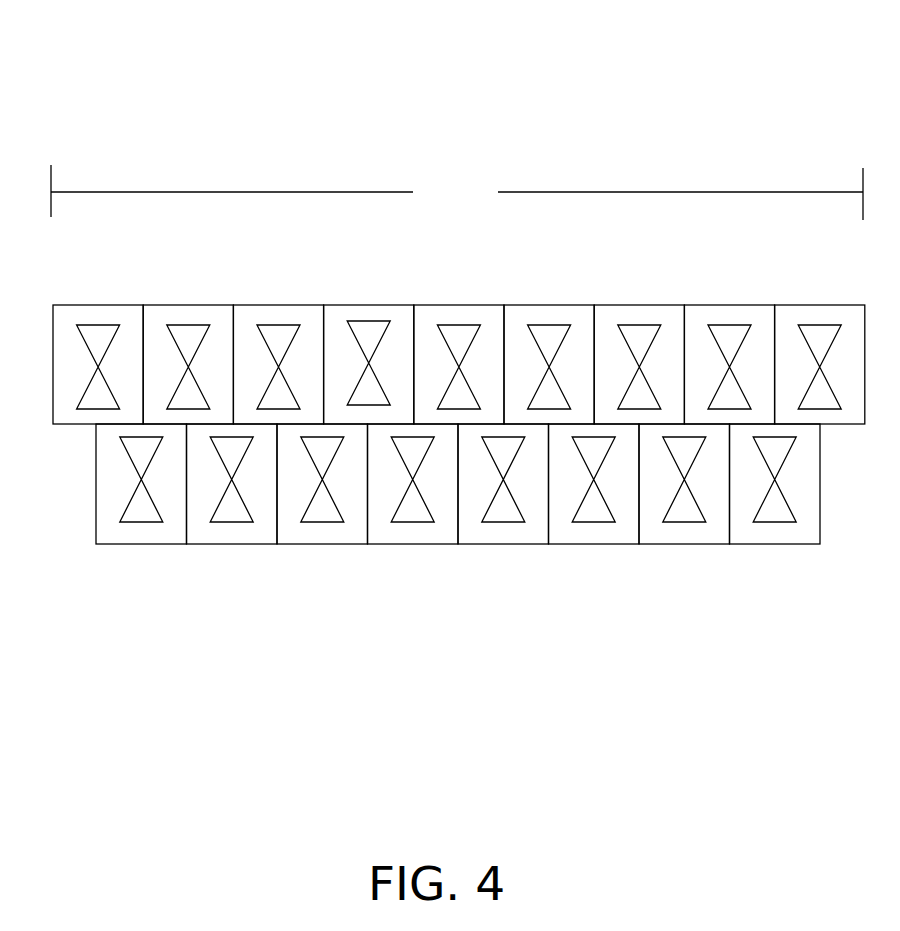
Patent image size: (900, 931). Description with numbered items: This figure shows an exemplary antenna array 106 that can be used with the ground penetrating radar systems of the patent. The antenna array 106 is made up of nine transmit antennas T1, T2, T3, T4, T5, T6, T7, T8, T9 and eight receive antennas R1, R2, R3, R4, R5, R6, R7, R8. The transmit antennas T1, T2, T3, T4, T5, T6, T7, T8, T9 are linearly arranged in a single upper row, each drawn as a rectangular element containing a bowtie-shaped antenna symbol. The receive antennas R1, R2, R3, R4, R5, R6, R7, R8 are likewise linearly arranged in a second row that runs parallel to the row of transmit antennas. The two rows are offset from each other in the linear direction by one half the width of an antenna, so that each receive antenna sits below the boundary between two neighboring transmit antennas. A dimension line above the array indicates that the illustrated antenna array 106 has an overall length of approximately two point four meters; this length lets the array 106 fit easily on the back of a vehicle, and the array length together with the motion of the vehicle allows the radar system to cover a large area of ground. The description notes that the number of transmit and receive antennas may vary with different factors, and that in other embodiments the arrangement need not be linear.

The antenna array 106 is at (562, 100).
The transmit antenna T1 is at (98, 345).
The transmit antenna T2 is at (188, 345).
The transmit antenna T3 is at (278, 345).
The transmit antenna T4 is at (369, 345).
The transmit antenna T5 is at (459, 345).
The transmit antenna T6 is at (549, 345).
The transmit antenna T7 is at (639, 345).
The transmit antenna T8 is at (729, 345).
The transmit antenna T9 is at (820, 345).
The receive antenna R1 is at (141, 501).
The receive antenna R2 is at (232, 501).
The receive antenna R3 is at (322, 501).
The receive antenna R4 is at (413, 501).
The receive antenna R5 is at (503, 501).
The receive antenna R6 is at (594, 501).
The receive antenna R7 is at (684, 501).
The receive antenna R8 is at (775, 501).